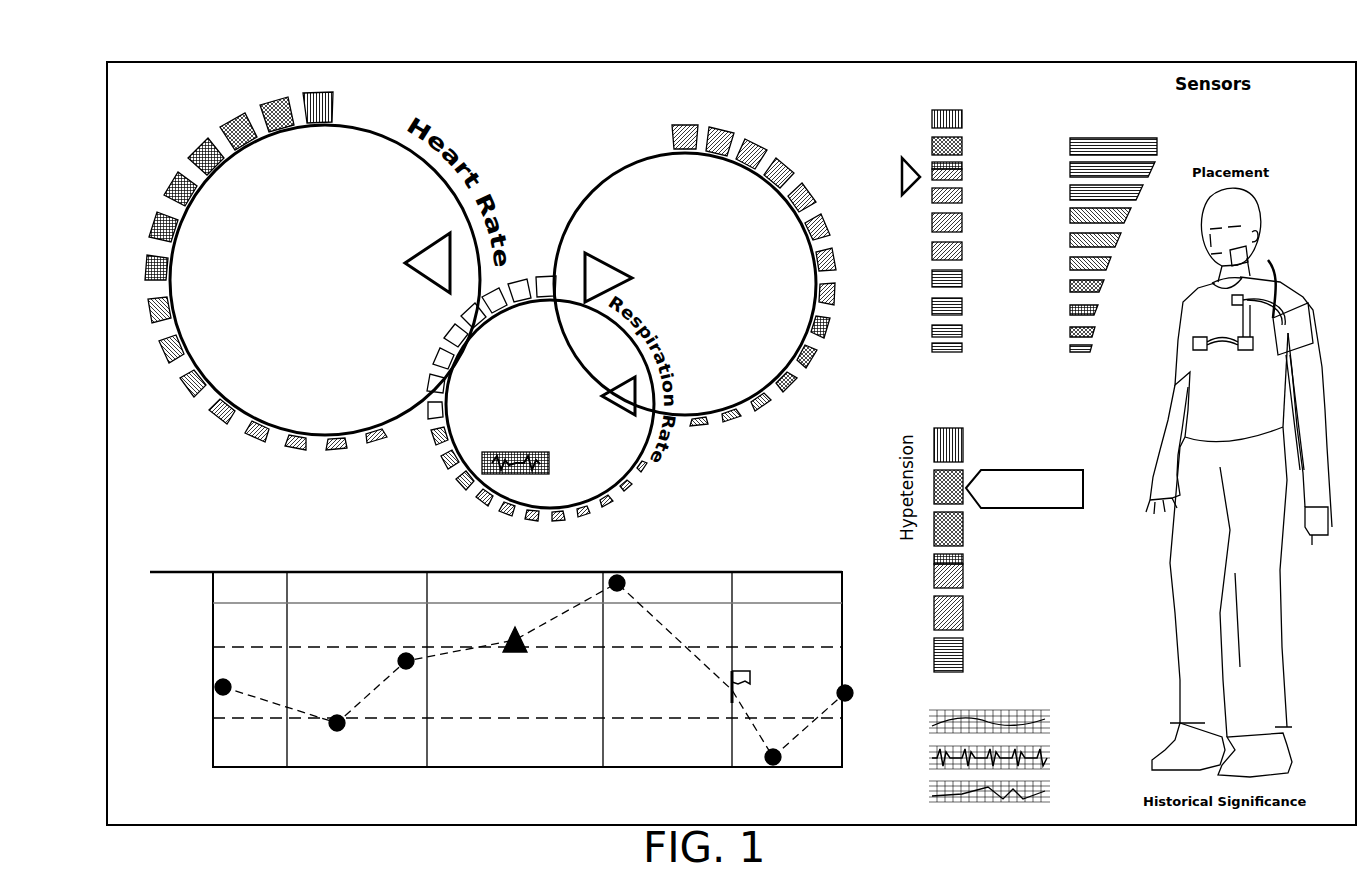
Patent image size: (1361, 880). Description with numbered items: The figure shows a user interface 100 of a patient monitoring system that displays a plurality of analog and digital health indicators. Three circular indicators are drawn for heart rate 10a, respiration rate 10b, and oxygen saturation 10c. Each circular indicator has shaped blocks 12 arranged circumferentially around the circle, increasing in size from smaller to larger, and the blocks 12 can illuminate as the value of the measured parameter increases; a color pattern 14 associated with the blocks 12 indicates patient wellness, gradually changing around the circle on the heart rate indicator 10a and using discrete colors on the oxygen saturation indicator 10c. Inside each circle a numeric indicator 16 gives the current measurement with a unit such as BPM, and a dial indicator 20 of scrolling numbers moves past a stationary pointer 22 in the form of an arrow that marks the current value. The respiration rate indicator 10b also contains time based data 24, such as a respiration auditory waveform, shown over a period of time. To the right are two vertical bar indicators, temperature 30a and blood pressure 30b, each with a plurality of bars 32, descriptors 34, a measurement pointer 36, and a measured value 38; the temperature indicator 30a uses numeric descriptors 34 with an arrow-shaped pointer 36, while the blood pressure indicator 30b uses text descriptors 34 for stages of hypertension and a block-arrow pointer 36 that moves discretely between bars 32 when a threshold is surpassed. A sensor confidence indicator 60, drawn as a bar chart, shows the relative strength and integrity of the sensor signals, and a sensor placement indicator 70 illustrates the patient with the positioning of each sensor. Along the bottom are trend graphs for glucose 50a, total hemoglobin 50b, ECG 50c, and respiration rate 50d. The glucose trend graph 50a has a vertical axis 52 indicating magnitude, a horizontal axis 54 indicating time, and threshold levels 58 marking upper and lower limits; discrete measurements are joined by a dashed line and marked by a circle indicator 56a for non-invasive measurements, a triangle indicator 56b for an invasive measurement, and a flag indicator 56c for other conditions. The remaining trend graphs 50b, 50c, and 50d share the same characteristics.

The user interface 100 is at (568, 60).
The heart rate indicator 10a is at (355, 125).
The respiration rate indicator 10b is at (648, 153).
The oxygen saturation (SpO2) indicator 10c is at (593, 505).
The shaped blocks 12 is at (243, 115).
The color pattern 14 is at (198, 410).
The numeric indicator 16 is at (215, 233).
The dial indicator 20 is at (374, 158).
The pointer 22 is at (478, 232).
The time based data 24 is at (542, 476).
The temperature indicator 30a is at (878, 88).
The blood pressure indicator 30b is at (895, 398).
The bars 32 is at (950, 115).
The descriptors 34 is at (1010, 145).
The measurement pointer 36 is at (902, 165).
The measured value 38 is at (867, 190).
The glucose trend graph 50a is at (313, 570).
The total hemoglobin (SpHb) trend graph 50b is at (1052, 720).
The ECG trend graph 50c is at (1052, 755).
The respiration rate (RRa) trend graph 50d is at (1052, 792).
The vertical axis 52 is at (213, 678).
The horizontal axis 54 is at (385, 770).
The circle indicator 56a is at (852, 690).
The triangle indicator 56b is at (515, 655).
The flag indicator 56c is at (752, 677).
The threshold levels 58 is at (238, 646).
The sensor confidence indicator 60 is at (1158, 140).
The sensor placement indicator 70 is at (1260, 210).